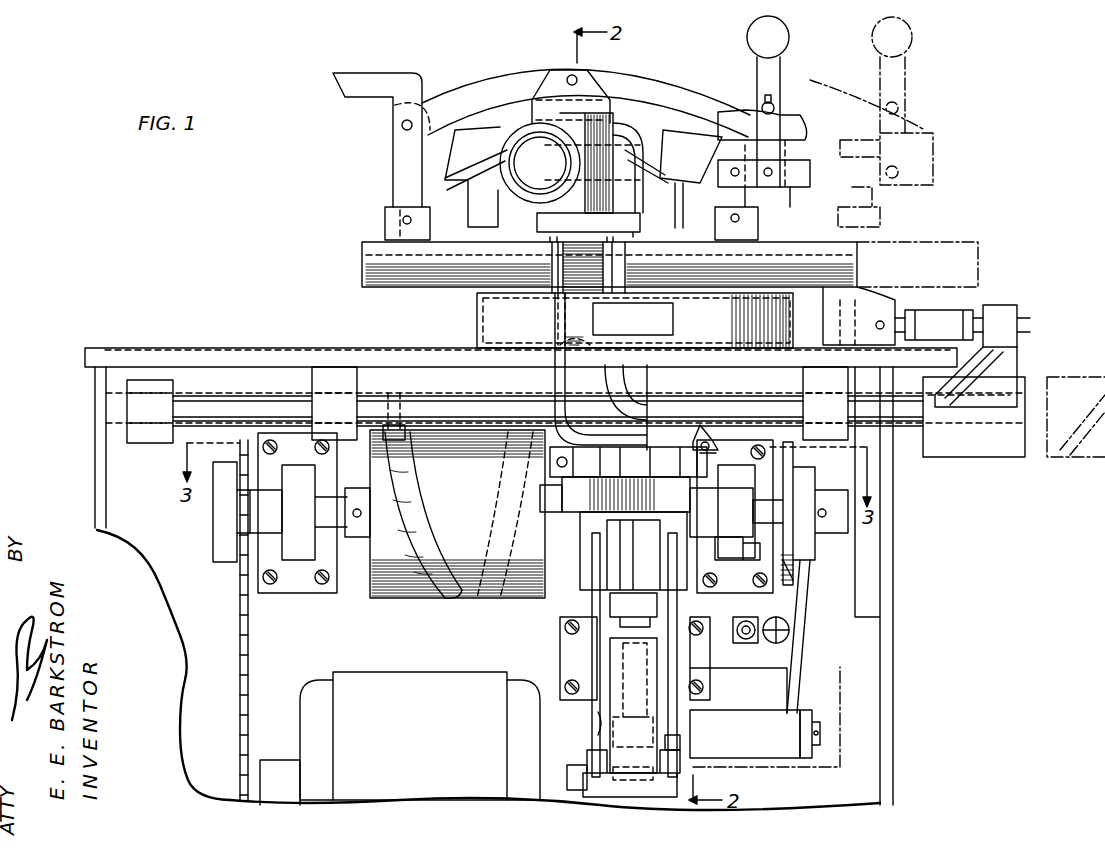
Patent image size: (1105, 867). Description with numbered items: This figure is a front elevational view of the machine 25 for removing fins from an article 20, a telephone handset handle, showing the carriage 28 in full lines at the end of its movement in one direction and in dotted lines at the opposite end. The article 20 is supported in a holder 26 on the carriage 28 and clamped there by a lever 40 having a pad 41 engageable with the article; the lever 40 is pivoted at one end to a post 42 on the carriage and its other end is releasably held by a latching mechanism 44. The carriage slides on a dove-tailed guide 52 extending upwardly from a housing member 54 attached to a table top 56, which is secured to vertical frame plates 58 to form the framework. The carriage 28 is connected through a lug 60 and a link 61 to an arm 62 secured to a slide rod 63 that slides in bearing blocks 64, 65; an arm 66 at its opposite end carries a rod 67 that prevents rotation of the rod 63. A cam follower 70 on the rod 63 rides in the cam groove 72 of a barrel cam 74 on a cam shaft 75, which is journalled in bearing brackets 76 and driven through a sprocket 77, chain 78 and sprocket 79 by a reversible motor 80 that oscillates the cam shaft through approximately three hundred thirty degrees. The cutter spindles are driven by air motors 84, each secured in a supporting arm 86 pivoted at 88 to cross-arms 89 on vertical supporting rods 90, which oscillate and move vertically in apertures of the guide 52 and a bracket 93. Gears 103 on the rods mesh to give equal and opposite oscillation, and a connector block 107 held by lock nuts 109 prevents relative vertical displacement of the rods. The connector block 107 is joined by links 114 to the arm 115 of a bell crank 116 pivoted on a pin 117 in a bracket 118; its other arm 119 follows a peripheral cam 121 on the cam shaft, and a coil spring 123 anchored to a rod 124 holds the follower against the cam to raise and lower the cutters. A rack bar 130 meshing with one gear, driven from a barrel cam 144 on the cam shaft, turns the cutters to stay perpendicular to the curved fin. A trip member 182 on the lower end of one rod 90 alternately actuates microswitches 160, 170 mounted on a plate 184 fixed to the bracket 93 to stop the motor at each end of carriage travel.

The article 20 is at (664, 135).
The machine 25 is at (175, 254).
The holder 26 is at (368, 144).
The carriage 28 is at (345, 238).
The lever 40 is at (637, 84).
The pad 41 is at (552, 102).
The post 42 is at (395, 186).
The latching mechanism 44 is at (790, 82).
The guide 52 is at (470, 268).
The housing member 54 is at (482, 320).
The table top 56 is at (178, 349).
The frame plates 58 is at (108, 465).
The lug 60 is at (850, 300).
The link 61 is at (968, 312).
The arm 62 is at (1002, 357).
The slide rod 63 is at (383, 402).
The bearing block 64 is at (318, 380).
The bearing block 65 is at (815, 382).
The arm 66 is at (142, 440).
The rod 67 is at (207, 410).
The cam follower 70 is at (402, 424).
The cam groove 72 is at (415, 498).
The barrel cam 74 is at (395, 598).
The cam shaft 75 is at (828, 538).
The bearing brackets 76 is at (300, 570).
The sprocket 77 is at (245, 515).
The chain 78 is at (240, 637).
The sprocket 79 is at (242, 782).
The reversible motor 80 is at (420, 736).
The motors 84 is at (522, 130).
The supporting arm 86 is at (578, 268).
The pivot 88 is at (705, 440).
The cross-arms 89 is at (665, 463).
The supporting rods 90 is at (650, 385).
The bracket 93 is at (615, 685).
The gears 103 is at (670, 497).
The connector block 107 is at (625, 565).
The lock nuts 109 is at (615, 598).
The links 114 is at (625, 633).
The arm 115 is at (670, 725).
The bell crank 116 is at (802, 773).
The pin 117 is at (822, 745).
The bracket 118 is at (812, 716).
The arm 119 is at (802, 612).
The peripheral cam 121 is at (806, 598).
The coil spring 123 is at (795, 645).
The rod 124 is at (750, 644).
The rack bar 130 is at (580, 500).
The barrel cam 144 is at (580, 514).
The microswitch 160 is at (678, 784).
The microswitch 170 is at (582, 785).
The trip member 182 is at (600, 722).
The plate 184 is at (600, 796).